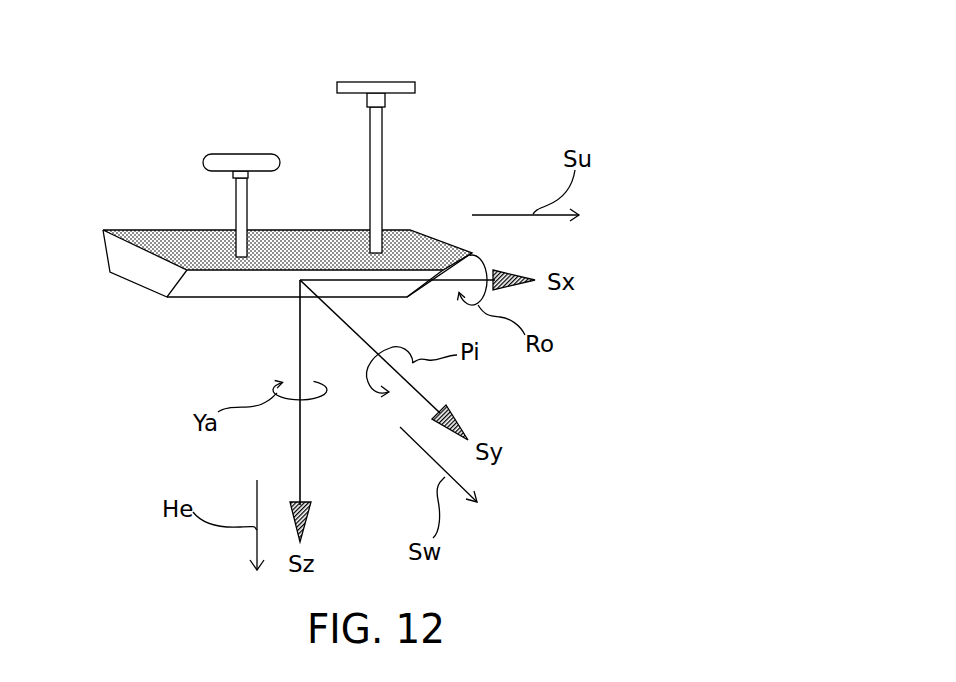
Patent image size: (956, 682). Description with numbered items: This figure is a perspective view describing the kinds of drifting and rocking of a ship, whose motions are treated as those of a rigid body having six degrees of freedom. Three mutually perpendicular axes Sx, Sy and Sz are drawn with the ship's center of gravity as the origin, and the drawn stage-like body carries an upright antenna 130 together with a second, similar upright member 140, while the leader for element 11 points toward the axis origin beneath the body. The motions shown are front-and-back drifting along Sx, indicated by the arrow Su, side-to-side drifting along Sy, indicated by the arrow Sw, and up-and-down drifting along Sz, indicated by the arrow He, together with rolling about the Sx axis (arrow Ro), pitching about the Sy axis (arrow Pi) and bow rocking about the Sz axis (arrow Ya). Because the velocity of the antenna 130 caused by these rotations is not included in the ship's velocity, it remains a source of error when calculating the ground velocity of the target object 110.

The reference point on stage bottom 11 is at (300, 280).
The target object 110 is at (167, 230).
The antenna 130 is at (395, 82).
The second pin member 140 is at (233, 155).